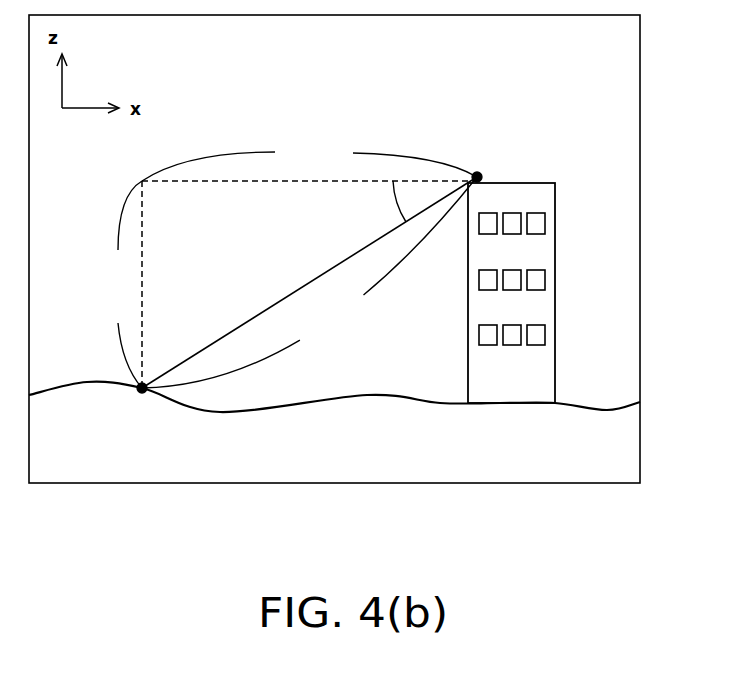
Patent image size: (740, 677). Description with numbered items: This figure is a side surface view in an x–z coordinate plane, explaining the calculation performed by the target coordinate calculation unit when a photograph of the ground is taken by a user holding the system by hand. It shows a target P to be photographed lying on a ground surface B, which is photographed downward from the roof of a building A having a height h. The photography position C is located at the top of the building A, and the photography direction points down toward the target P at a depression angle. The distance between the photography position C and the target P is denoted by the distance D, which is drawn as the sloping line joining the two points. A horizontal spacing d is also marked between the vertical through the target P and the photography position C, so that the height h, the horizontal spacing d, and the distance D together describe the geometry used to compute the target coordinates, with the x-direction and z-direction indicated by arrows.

The building A is at (555, 300).
The ground surface B is at (408, 400).
The photography position C is at (518, 126).
The target to be photographed P is at (142, 388).
The horizontal distance d is at (309, 163).
The height h is at (122, 284).
The distance D is at (309, 282).